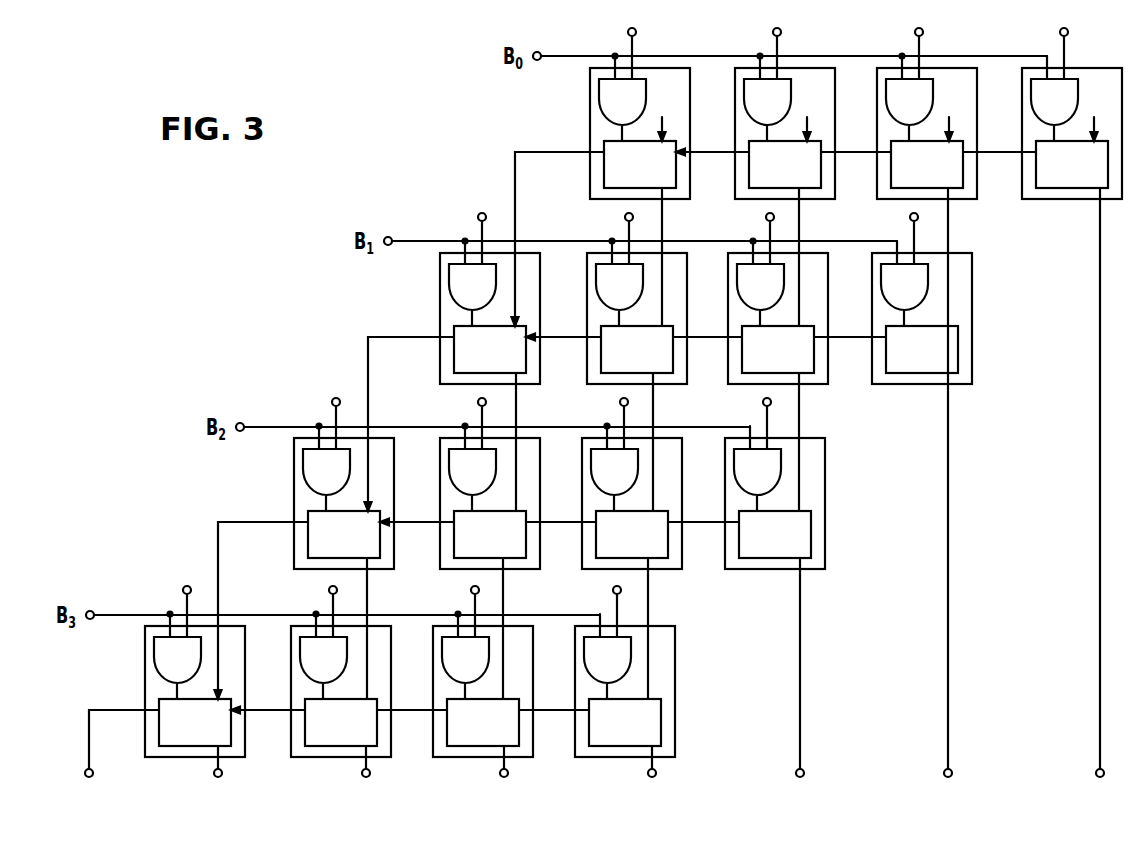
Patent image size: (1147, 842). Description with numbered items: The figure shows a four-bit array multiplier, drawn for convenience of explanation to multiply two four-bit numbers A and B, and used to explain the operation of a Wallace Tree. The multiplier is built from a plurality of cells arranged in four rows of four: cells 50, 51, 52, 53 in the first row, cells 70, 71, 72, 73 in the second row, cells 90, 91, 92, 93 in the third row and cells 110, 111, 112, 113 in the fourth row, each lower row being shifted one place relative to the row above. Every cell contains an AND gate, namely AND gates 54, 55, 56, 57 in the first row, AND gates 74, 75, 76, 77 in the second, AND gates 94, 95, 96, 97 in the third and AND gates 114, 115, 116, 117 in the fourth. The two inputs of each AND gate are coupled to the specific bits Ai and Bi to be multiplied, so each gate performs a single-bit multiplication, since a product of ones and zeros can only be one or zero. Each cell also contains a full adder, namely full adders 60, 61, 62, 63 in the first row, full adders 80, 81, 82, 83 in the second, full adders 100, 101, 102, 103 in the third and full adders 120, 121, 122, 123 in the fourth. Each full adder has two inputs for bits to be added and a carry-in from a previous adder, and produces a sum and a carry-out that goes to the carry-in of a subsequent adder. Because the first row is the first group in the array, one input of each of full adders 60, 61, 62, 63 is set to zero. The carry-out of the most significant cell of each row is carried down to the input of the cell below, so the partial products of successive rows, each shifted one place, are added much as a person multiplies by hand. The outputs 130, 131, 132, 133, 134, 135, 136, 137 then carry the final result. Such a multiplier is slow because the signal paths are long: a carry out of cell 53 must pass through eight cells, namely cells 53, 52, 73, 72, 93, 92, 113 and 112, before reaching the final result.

The cell 50 is at (619, 173).
The cell 51 is at (769, 173).
The cell 52 is at (911, 109).
The cell 53 is at (1056, 109).
The AND gate 54 is at (622, 88).
The AND gate 55 is at (767, 88).
The AND gate 56 is at (909, 88).
The AND gate 57 is at (1054, 88).
The full adder 60 is at (613, 164).
The full adder 61 is at (762, 164).
The full adder 62 is at (904, 164).
The full adder 63 is at (1049, 164).
The cell 70 is at (470, 358).
The cell 71 is at (621, 358).
The cell 72 is at (762, 358).
The cell 73 is at (906, 294).
The AND gate 74 is at (472, 273).
The AND gate 75 is at (619, 273).
The AND gate 76 is at (760, 273).
The AND gate 77 is at (904, 273).
The full adder 80 is at (465, 349).
The full adder 81 is at (614, 349).
The full adder 82 is at (755, 349).
The full adder 83 is at (899, 349).
The cell 90 is at (322, 544).
The cell 91 is at (472, 544).
The cell 92 is at (614, 544).
The cell 93 is at (757, 479).
The AND gate 94 is at (326, 458).
The AND gate 95 is at (472, 458).
The AND gate 96 is at (614, 458).
The AND gate 97 is at (757, 458).
The full adder 100 is at (316, 534).
The full adder 101 is at (465, 534).
The full adder 102 is at (607, 534).
The full adder 103 is at (750, 534).
The cell 110 is at (170, 667).
The cell 111 is at (324, 667).
The cell 112 is at (466, 667).
The cell 113 is at (608, 667).
The AND gate 114 is at (177, 646).
The AND gate 115 is at (323, 646).
The AND gate 116 is at (465, 646).
The AND gate 117 is at (607, 646).
The full adder 120 is at (169, 722).
The full adder 121 is at (317, 722).
The full adder 122 is at (459, 722).
The full adder 123 is at (601, 722).
The output 130 is at (122, 748).
The output 131 is at (234, 766).
The output 132 is at (382, 766).
The output 133 is at (520, 766).
The output 134 is at (668, 766).
The output 135 is at (816, 672).
The output 136 is at (964, 487).
The output 137 is at (1116, 487).